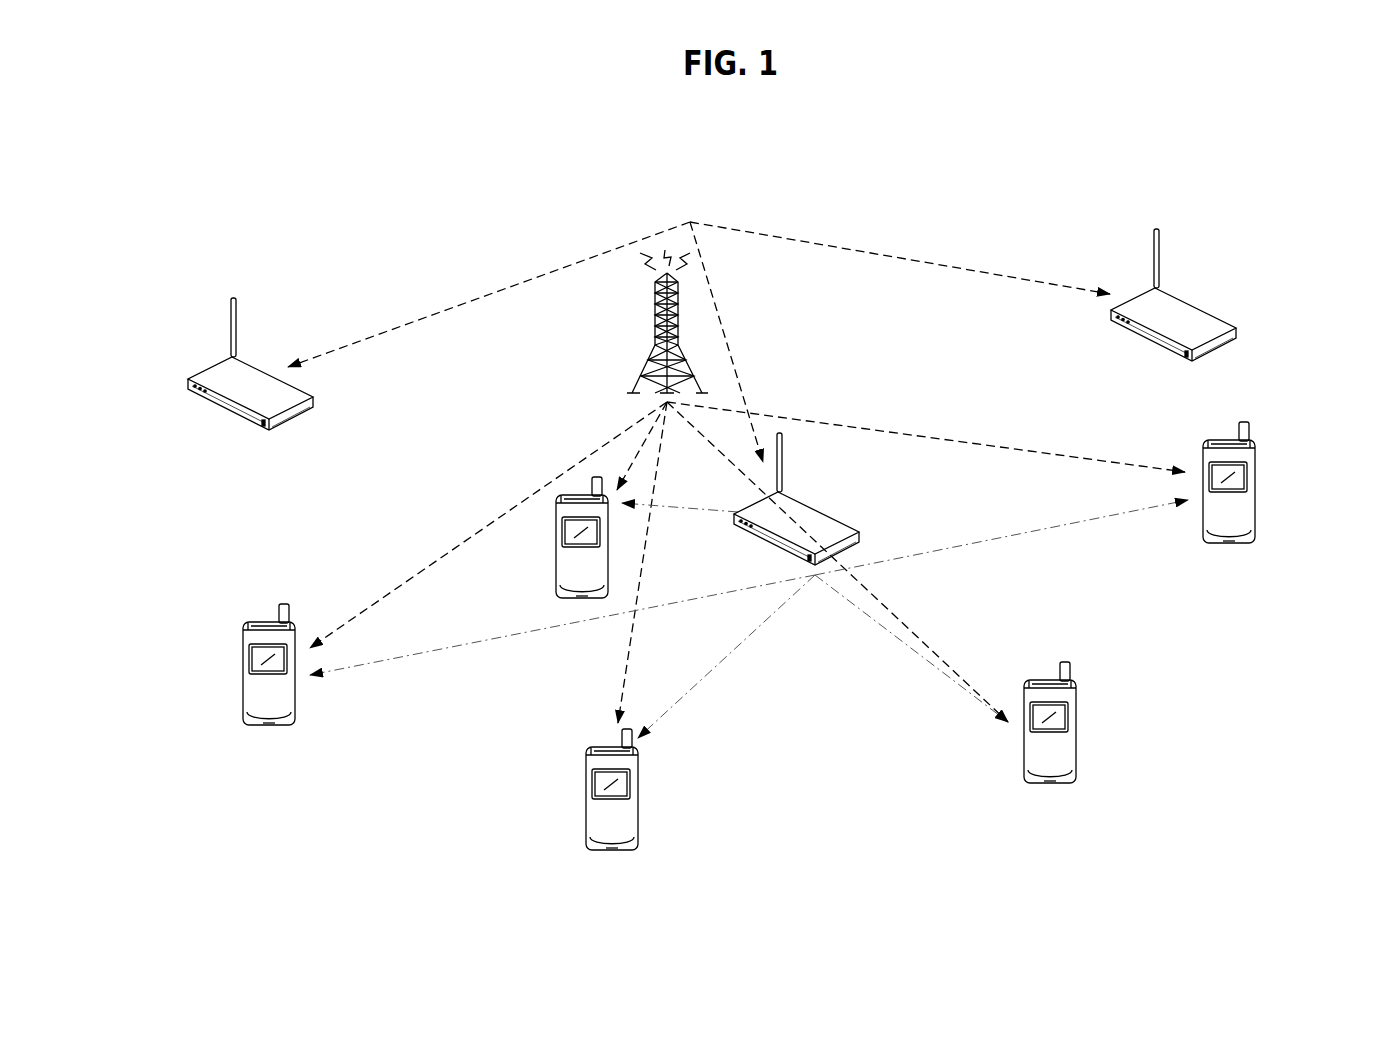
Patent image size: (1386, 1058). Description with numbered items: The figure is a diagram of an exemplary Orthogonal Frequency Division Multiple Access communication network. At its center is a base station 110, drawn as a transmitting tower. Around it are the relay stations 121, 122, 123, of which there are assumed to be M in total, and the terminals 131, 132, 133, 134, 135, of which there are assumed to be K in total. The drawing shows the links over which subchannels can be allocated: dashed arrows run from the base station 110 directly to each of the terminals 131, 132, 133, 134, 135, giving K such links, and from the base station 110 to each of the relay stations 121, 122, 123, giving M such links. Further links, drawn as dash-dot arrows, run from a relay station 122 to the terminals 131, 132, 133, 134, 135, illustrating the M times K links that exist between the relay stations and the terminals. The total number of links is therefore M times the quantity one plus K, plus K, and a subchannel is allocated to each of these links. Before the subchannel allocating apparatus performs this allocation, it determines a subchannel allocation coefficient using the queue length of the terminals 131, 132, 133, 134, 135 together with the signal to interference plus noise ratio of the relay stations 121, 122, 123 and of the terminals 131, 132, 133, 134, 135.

The base station 110 is at (680, 310).
The relay station 121 is at (205, 365).
The relay station 122 is at (818, 505).
The relay station 123 is at (1197, 302).
The terminal 131 is at (556, 525).
The terminal 132 is at (245, 662).
The terminal 133 is at (586, 788).
The terminal 134 is at (1075, 720).
The terminal 135 is at (1255, 478).